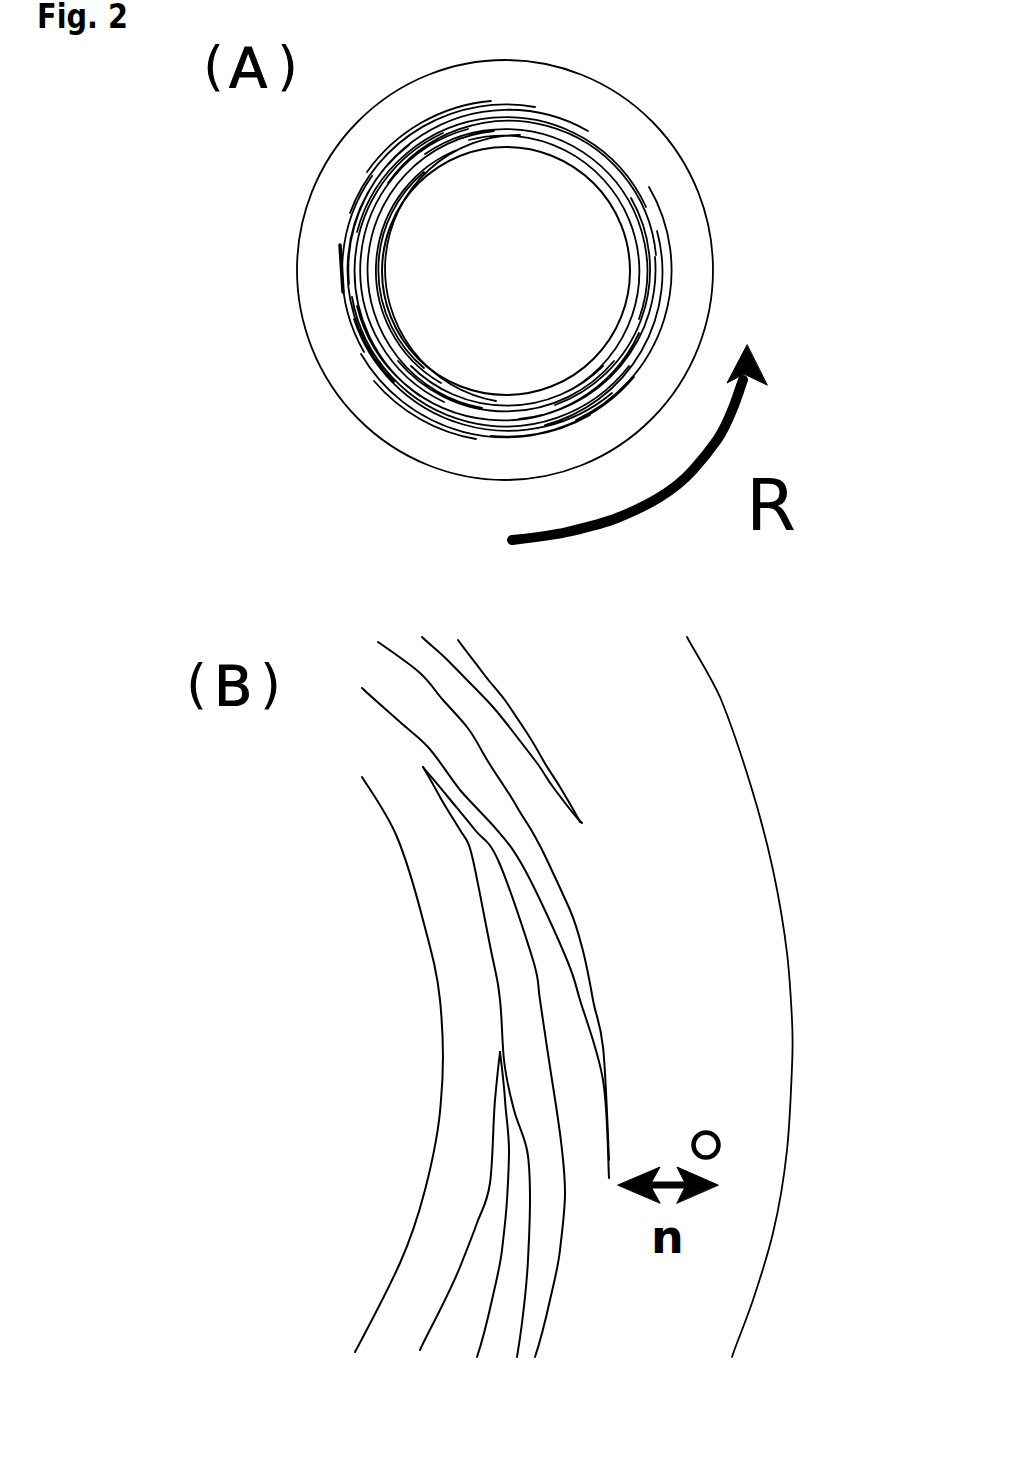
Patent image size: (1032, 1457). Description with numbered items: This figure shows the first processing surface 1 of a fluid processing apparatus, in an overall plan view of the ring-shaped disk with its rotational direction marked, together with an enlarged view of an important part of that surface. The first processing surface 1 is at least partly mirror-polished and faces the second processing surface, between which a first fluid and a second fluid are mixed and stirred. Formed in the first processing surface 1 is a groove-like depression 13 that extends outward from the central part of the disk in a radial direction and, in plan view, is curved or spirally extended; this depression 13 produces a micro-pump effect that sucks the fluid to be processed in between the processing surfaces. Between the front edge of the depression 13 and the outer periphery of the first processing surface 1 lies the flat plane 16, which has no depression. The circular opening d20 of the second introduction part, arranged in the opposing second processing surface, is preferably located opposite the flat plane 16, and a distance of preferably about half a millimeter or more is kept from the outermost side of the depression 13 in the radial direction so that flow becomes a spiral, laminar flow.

The first processing surface 1 is at (363, 380).
The groove-like depression 13 is at (345, 250).
The flat plane 16 is at (633, 790).
The opening of the second introduction part d20 is at (710, 1130).